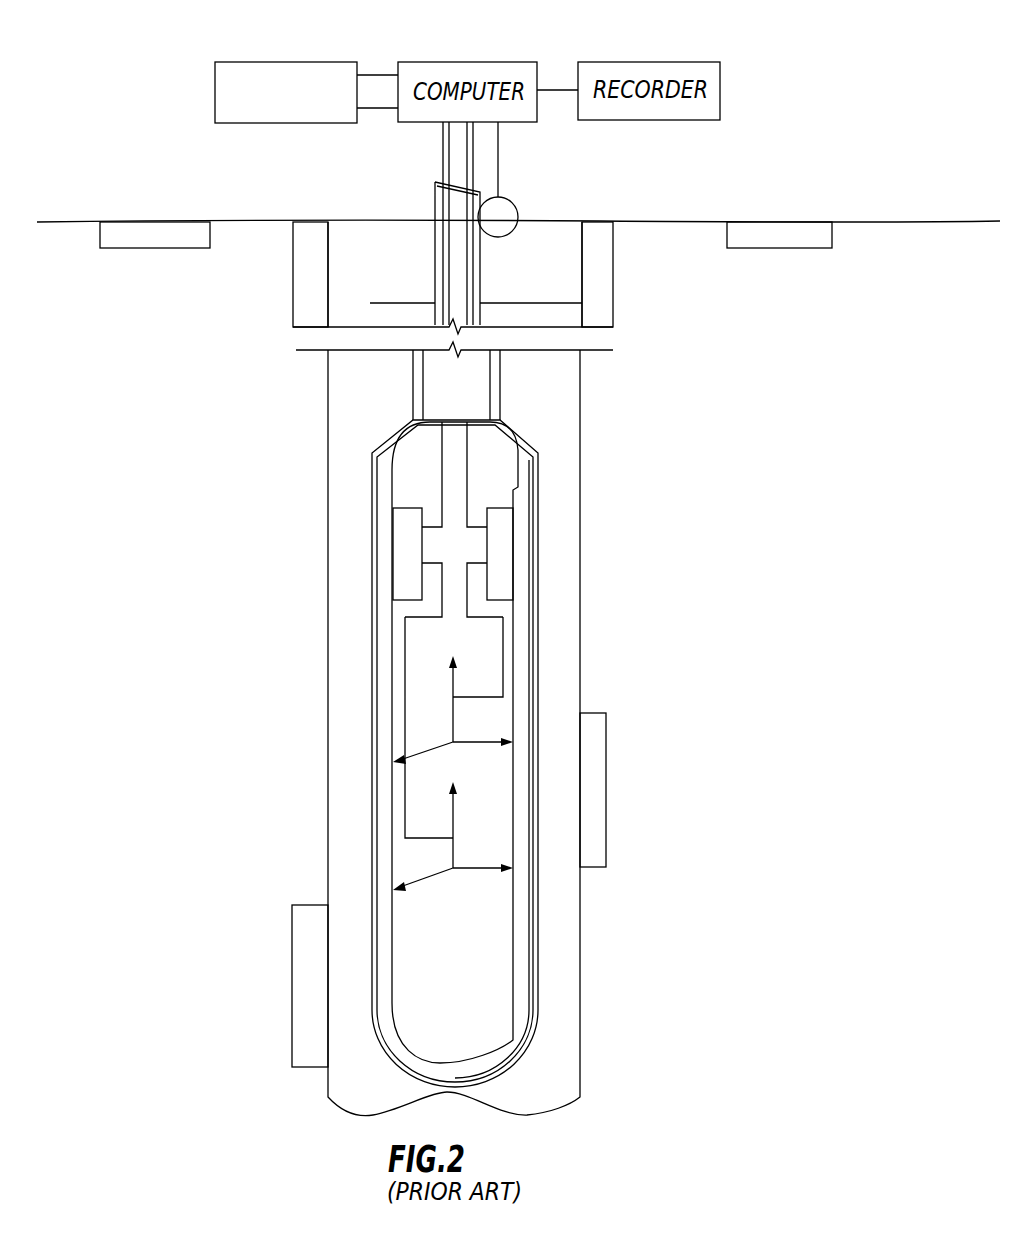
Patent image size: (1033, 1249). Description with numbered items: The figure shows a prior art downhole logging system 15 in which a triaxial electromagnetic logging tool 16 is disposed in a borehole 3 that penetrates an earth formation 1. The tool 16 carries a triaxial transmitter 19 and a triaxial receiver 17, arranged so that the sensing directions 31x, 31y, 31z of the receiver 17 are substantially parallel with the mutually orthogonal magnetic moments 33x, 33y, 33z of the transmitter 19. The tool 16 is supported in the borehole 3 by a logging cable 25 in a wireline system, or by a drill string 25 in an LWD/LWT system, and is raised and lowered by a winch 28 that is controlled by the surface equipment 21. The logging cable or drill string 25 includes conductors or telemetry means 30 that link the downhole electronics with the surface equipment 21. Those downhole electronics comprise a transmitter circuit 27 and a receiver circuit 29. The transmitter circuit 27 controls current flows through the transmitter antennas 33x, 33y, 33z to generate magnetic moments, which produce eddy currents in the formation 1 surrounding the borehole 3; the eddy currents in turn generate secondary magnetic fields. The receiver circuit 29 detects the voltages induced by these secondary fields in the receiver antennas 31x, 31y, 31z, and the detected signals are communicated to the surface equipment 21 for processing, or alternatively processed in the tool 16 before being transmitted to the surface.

The formation 1 is at (192, 335).
The borehole 3 is at (377, 272).
The downhole logging system 15 is at (535, 270).
The logging tool 16 is at (391, 448).
The triaxial receiver 17 is at (462, 879).
The triaxial transmitter 19 is at (439, 726).
The surface equipment 21 is at (214, 88).
The logging cable 25 is at (450, 205).
The transmitter circuit 27 is at (405, 552).
The winch 28 is at (506, 198).
The receiver circuit 29 is at (503, 552).
The conductors or telemetry means 30 is at (448, 155).
The receiver antenna 31x is at (487, 870).
The receiver antenna 31y is at (420, 878).
The receiver antenna 31z is at (453, 825).
The transmitter antenna 33x is at (483, 742).
The transmitter antenna 33y is at (425, 752).
The transmitter antenna 33z is at (453, 683).